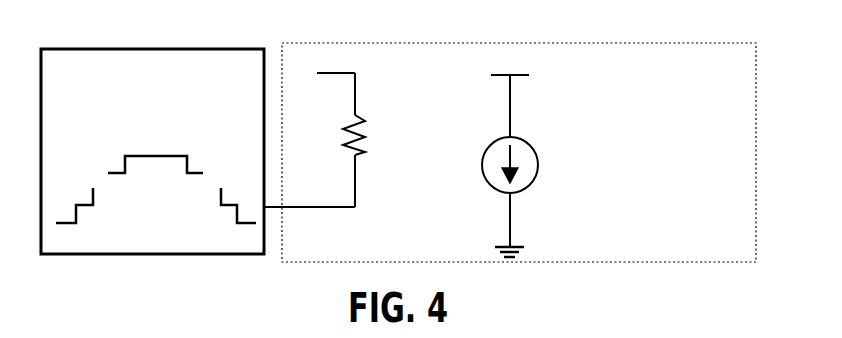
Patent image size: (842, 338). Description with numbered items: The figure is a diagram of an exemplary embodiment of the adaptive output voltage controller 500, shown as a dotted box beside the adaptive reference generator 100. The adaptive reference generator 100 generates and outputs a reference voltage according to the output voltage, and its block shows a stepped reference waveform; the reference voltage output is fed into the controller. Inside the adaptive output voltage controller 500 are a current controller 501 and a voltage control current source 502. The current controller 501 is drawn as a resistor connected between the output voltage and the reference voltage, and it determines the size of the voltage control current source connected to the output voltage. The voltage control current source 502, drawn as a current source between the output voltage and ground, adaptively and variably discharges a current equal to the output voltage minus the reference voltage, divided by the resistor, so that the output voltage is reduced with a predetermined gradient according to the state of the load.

The adaptive reference generator 100 is at (127, 49).
The adaptive output voltage controller 500 is at (638, 43).
The current controller 501 is at (362, 92).
The voltage control current source 502 is at (517, 110).